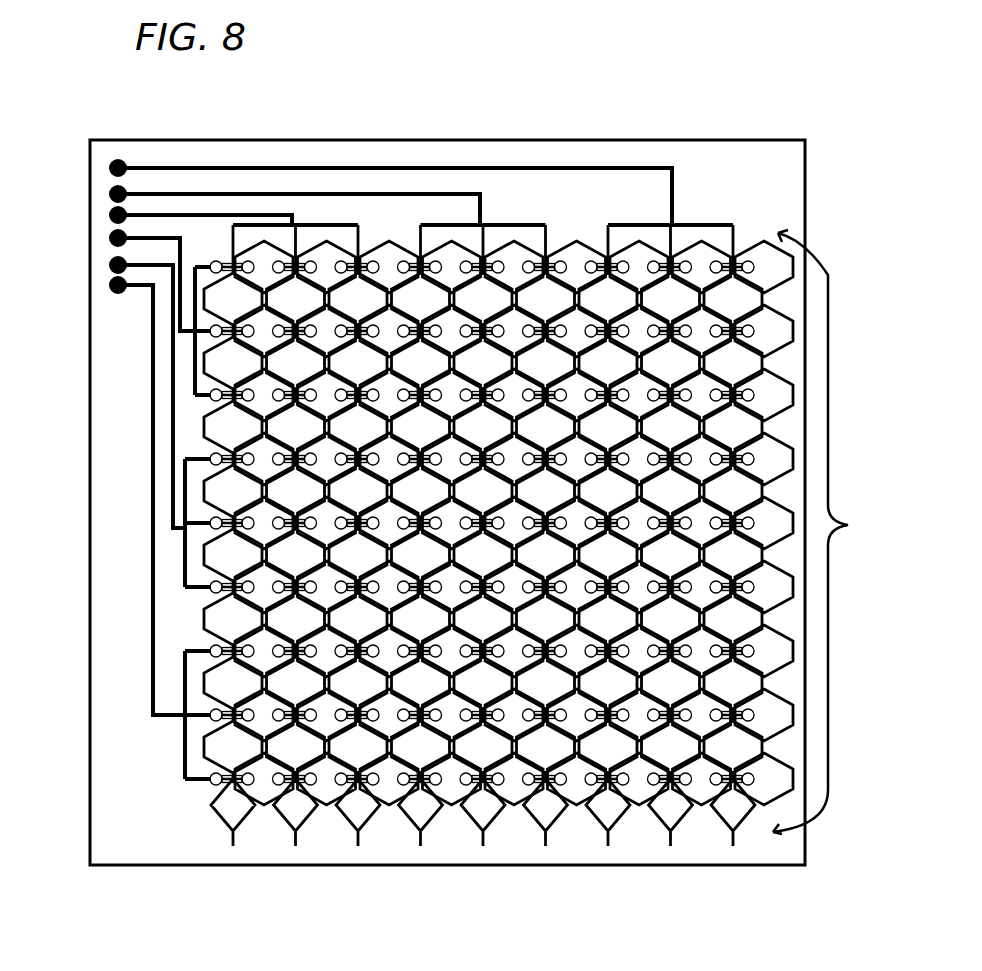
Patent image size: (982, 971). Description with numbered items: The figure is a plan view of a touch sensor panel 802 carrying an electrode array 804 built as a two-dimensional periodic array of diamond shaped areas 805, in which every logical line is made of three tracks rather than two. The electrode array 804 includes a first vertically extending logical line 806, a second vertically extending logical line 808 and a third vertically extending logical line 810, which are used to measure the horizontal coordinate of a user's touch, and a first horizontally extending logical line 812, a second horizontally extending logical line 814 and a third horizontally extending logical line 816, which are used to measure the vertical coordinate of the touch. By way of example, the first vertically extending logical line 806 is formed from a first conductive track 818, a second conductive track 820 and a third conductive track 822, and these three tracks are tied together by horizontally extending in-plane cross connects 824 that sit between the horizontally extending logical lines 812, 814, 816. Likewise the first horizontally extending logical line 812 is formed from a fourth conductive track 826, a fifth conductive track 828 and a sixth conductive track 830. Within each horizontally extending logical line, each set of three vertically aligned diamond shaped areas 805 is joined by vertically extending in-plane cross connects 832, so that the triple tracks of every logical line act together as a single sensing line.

The touch sensor panel 802 is at (760, 165).
The electrode array 804 is at (461, 515).
The diamond shaped areas 805 is at (483, 515).
The first vertically extending logical line 806 is at (286, 272).
The second vertically extending logical line 808 is at (483, 226).
The third vertically extending logical line 810 is at (675, 226).
The first horizontally extending logical line 812 is at (180, 330).
The second horizontally extending logical line 814 is at (184, 493).
The third horizontally extending logical line 816 is at (184, 712).
The first conductive track 818 is at (220, 292).
The second conductive track 820 is at (292, 290).
The third conductive track 822 is at (415, 340).
The horizontally extending in-plane cross connects 824 is at (453, 550).
The fourth conductive track 826 is at (768, 271).
The fifth conductive track 828 is at (767, 335).
The sixth conductive track 830 is at (762, 398).
The vertically extending in-plane cross connects 832 is at (296, 330).